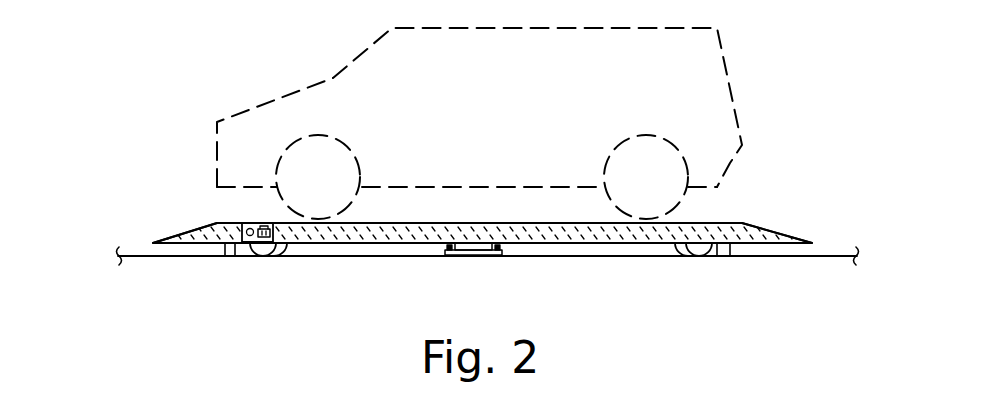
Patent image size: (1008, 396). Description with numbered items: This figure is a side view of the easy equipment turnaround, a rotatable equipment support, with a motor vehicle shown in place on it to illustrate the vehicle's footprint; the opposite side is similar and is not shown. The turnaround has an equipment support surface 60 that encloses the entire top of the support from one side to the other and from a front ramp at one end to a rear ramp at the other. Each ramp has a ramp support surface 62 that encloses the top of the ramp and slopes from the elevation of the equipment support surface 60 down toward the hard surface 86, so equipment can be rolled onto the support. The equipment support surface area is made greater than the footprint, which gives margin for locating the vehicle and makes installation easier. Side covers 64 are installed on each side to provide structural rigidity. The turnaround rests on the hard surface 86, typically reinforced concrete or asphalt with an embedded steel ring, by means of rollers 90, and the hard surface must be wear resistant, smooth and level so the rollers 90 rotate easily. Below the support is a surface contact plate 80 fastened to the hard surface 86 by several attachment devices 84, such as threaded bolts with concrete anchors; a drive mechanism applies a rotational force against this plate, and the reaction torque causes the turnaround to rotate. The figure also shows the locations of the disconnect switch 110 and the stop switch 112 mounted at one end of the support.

The equipment support surface 60 is at (692, 223).
The ramp support surface 62 is at (188, 233).
The side covers 64 is at (733, 226).
The surface contact plate 80 is at (472, 254).
The attachment devices 84 is at (450, 246).
The hard surface 86 is at (328, 258).
The rollers 90 is at (265, 257).
The disconnect switch 110 is at (267, 223).
The stop switch 112 is at (241, 223).